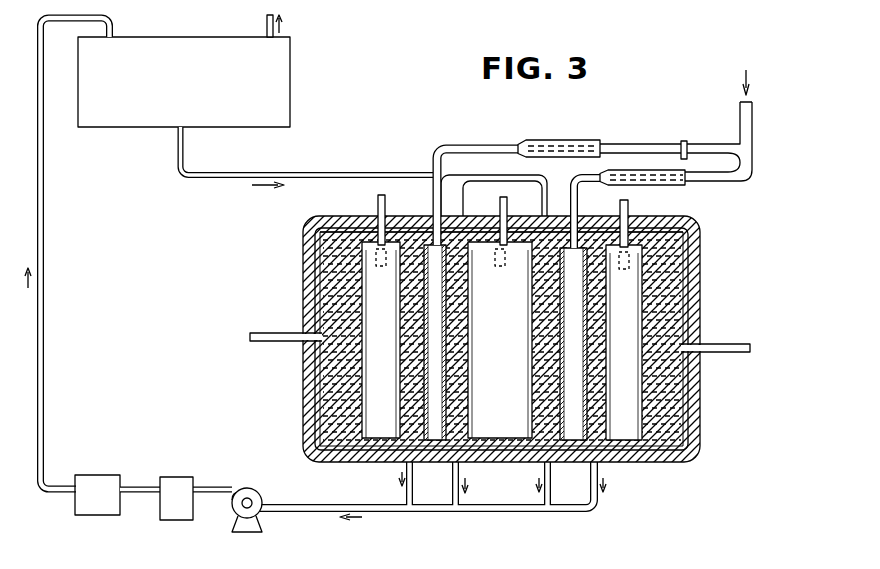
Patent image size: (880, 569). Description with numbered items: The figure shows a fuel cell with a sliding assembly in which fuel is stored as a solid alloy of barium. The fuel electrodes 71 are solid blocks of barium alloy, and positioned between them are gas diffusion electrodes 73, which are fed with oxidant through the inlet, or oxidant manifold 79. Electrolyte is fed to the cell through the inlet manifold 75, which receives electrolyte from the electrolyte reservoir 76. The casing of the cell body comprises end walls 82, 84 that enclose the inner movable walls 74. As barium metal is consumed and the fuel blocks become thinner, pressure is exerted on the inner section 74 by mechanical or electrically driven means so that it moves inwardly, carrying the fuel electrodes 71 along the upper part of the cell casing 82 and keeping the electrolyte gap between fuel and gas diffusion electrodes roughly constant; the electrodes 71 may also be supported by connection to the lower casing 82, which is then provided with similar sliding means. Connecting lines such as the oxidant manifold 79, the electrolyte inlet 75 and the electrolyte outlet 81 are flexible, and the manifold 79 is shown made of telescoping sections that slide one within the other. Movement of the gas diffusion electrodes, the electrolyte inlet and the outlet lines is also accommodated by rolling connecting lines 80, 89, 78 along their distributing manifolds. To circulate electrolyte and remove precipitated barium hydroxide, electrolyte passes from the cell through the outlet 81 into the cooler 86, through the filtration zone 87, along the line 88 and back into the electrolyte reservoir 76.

The fuel electrodes 71 is at (390, 326).
The gas diffusion electrodes 73 is at (556, 232).
The inner movable walls 74 is at (318, 368).
The inlet manifold 75 is at (207, 178).
The electrolyte reservoir 76 is at (178, 40).
The rolling connecting lines 78 is at (452, 477).
The oxidant manifold 79 is at (752, 113).
The rolling connecting lines 80 is at (433, 160).
The electrolyte outlet 81 is at (503, 512).
The end wall 82 is at (350, 216).
The end wall 84 is at (304, 287).
The cooler 86 is at (178, 516).
The filtration zone 87 is at (88, 513).
The line 88 is at (44, 336).
The rolling connecting lines 89 is at (457, 197).